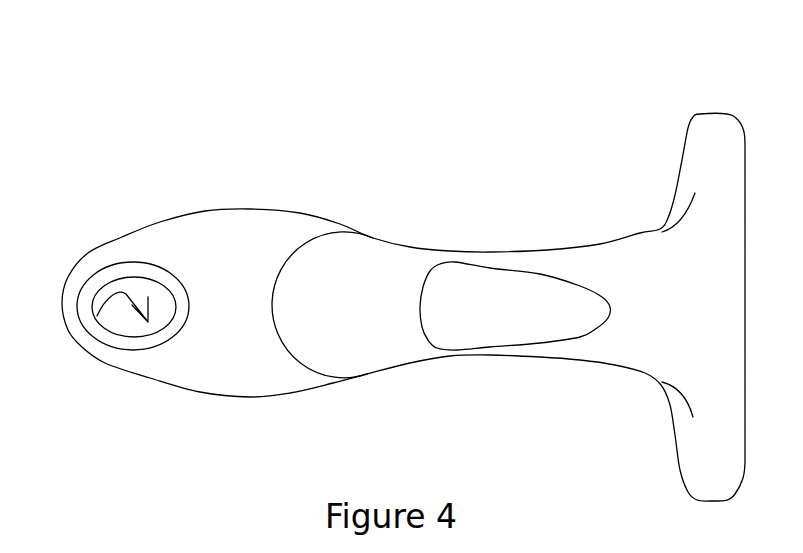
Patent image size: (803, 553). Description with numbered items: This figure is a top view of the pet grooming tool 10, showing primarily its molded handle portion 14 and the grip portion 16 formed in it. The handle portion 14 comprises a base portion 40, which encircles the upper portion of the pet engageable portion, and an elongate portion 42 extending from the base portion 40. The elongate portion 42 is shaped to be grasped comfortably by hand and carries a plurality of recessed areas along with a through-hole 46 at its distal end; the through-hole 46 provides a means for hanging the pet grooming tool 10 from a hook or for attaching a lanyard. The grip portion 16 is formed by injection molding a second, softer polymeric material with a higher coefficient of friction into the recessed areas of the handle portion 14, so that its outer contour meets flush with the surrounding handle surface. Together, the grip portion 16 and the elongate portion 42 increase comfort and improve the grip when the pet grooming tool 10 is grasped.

The pet grooming tool 10 is at (432, 135).
The handle portion 14 is at (365, 275).
The grip portion 16 is at (483, 292).
The base portion 40 is at (700, 155).
The elongate portion 42 is at (310, 275).
The through-hole 46 is at (98, 318).